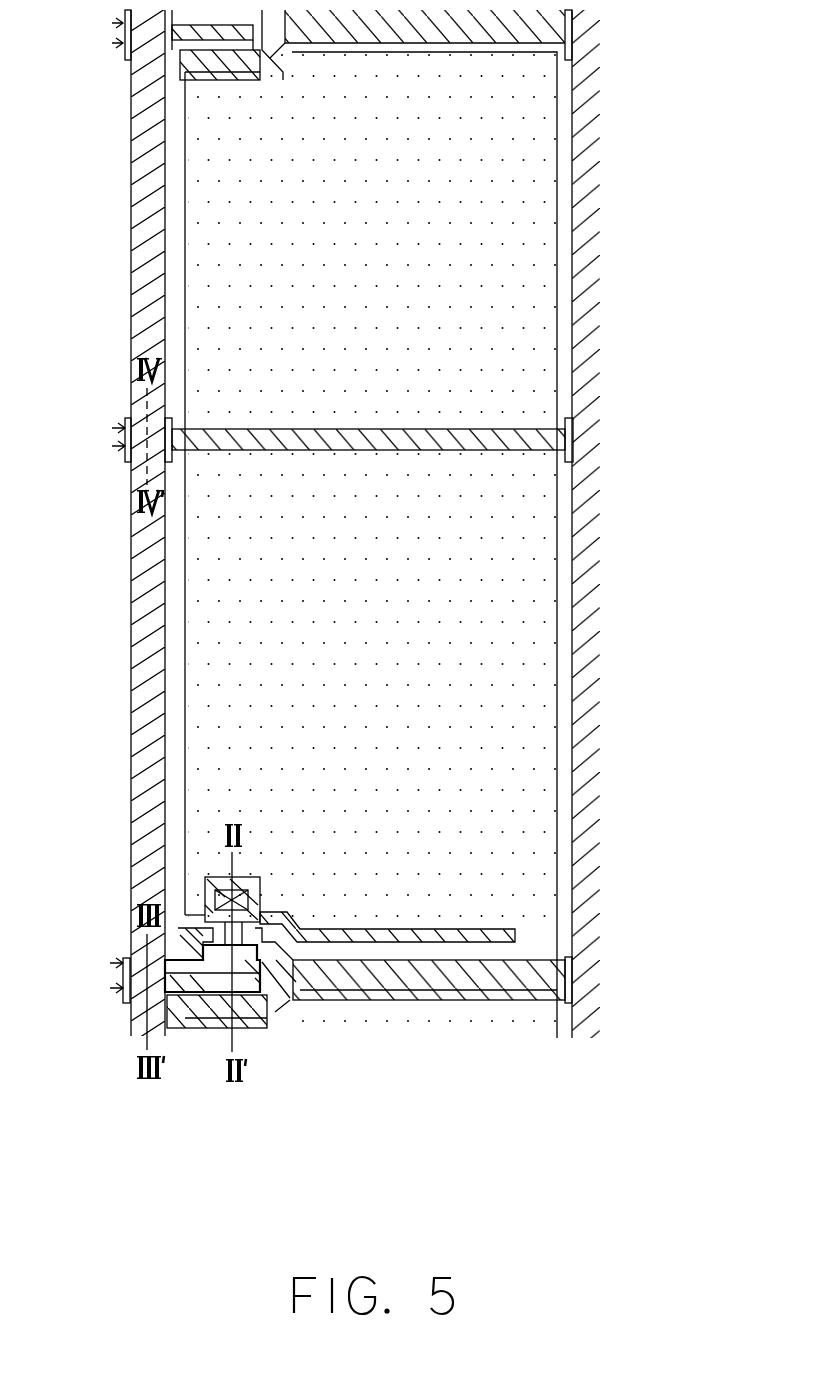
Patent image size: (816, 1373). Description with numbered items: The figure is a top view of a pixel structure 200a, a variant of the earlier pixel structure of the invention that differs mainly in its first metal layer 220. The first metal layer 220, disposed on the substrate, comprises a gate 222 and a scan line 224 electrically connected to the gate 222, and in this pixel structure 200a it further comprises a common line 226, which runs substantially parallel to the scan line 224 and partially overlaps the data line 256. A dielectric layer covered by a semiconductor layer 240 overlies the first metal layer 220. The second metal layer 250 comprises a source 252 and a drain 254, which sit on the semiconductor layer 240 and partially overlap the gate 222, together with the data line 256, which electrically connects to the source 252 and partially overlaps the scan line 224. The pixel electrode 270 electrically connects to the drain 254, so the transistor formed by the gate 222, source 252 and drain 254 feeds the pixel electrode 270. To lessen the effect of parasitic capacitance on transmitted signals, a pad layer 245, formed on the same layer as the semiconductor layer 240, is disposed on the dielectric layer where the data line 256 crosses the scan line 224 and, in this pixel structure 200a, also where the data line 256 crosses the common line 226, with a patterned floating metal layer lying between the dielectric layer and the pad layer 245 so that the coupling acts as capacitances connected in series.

The pixel structure 200a is at (386, 626).
The first metal layer 220 is at (416, 809).
The gate 222 is at (505, 1115).
The scan line 224 is at (405, 985).
The common line 226 is at (436, 450).
The semiconductor layer 240 is at (250, 1030).
The pad layer 245 is at (125, 428).
The second metal layer 250 is at (192, 1059).
The source 252 is at (205, 1030).
The drain 254 is at (200, 1030).
The data line 256 is at (258, 1180).
The pixel electrode 270 is at (540, 882).